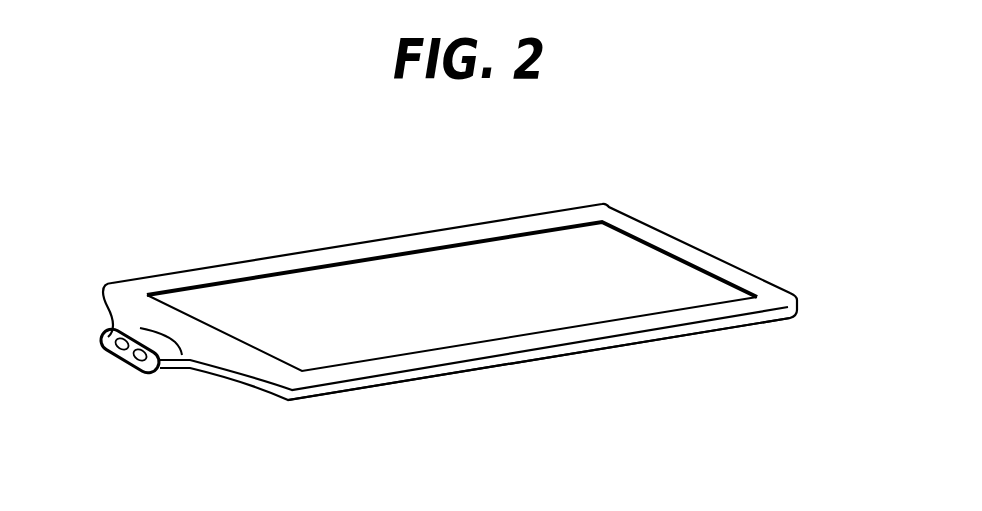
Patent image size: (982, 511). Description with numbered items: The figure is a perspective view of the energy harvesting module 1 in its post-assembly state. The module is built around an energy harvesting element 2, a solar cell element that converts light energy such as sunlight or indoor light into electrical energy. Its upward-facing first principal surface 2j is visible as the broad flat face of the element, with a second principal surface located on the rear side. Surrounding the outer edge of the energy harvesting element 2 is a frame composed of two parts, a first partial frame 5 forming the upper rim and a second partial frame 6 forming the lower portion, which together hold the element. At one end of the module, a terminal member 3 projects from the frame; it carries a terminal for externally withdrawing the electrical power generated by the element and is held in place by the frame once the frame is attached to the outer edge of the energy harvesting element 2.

The energy harvesting module 1 is at (444, 257).
The energy harvesting element 2 is at (452, 273).
The first principal surface 2j is at (417, 293).
The terminal member 3 is at (110, 352).
The first partial frame 5 is at (729, 259).
The second partial frame 6 is at (718, 335).